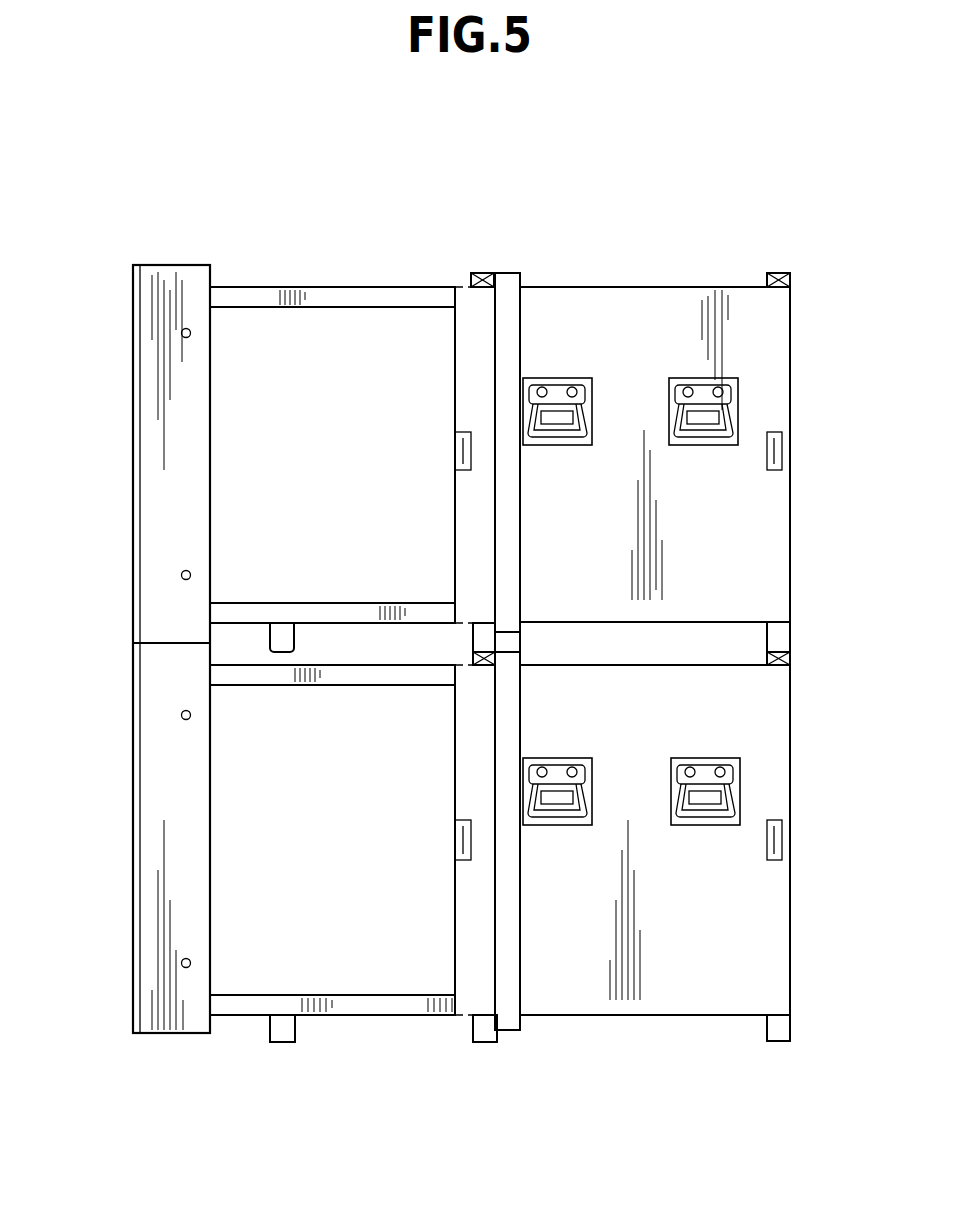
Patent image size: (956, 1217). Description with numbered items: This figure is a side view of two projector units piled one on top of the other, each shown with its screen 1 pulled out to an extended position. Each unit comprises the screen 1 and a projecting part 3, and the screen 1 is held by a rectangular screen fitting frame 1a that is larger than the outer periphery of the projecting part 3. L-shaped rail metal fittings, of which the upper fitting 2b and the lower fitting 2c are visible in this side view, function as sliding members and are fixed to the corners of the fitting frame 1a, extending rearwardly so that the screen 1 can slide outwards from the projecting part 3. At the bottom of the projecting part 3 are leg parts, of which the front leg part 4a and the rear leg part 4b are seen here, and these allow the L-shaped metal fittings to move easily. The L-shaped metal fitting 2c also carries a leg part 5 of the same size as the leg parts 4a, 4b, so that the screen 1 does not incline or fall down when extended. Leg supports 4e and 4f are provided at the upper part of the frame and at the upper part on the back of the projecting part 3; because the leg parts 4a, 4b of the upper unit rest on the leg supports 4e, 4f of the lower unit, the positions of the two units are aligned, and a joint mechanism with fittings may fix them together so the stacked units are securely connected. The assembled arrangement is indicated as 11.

The rack assembly 11 is at (160, 252).
The screen 1 is at (135, 372).
The screen fitting frame 1a is at (190, 393).
The L-shaped rail metal fitting 2b is at (380, 302).
The L-shaped rail metal fitting 2c is at (378, 617).
The projecting part 3 is at (625, 316).
The leg part 4a is at (485, 637).
The leg part 4b is at (790, 635).
The leg support 4e is at (482, 278).
The leg support 4f is at (775, 279).
The leg part 5 is at (295, 640).